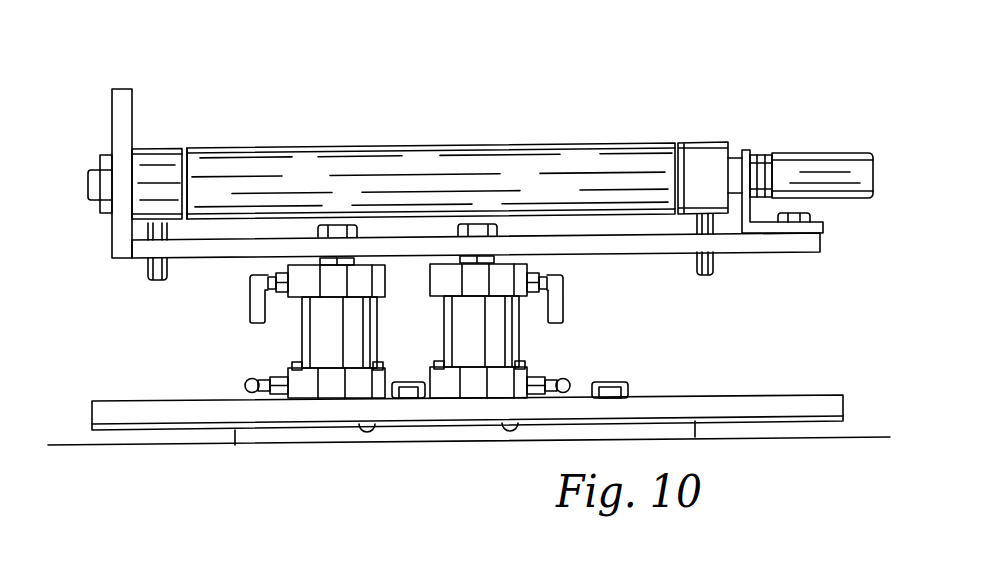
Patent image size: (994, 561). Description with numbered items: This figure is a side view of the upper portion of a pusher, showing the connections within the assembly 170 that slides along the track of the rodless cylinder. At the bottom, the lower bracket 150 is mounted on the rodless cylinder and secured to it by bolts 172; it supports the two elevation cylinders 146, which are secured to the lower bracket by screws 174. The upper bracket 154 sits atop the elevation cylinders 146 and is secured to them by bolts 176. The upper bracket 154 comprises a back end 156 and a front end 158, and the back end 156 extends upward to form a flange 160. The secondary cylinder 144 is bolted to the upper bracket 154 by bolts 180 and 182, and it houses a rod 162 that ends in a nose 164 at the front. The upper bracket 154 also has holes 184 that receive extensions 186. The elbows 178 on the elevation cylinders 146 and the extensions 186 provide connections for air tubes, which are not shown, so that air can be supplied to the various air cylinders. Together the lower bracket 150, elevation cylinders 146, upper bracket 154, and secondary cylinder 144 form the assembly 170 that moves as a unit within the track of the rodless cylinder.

The secondary cylinder 144 is at (280, 140).
The elevation cylinders 146 is at (483, 333).
The lower bracket 150 is at (852, 400).
The upper bracket 154 is at (830, 247).
The back end 156 is at (103, 115).
The front end 158 is at (742, 150).
The flange 160 is at (122, 116).
The rod 162 is at (807, 157).
The nose 164 is at (875, 177).
The assembly 170 is at (446, 67).
The bolts 172 is at (403, 400).
The screws 174 is at (375, 372).
The bolts 176 is at (338, 225).
The elbows 178 is at (250, 306).
The bolt 180 is at (105, 218).
The bolt 182 is at (817, 212).
The holes 184 is at (697, 243).
The extensions 186 is at (153, 280).